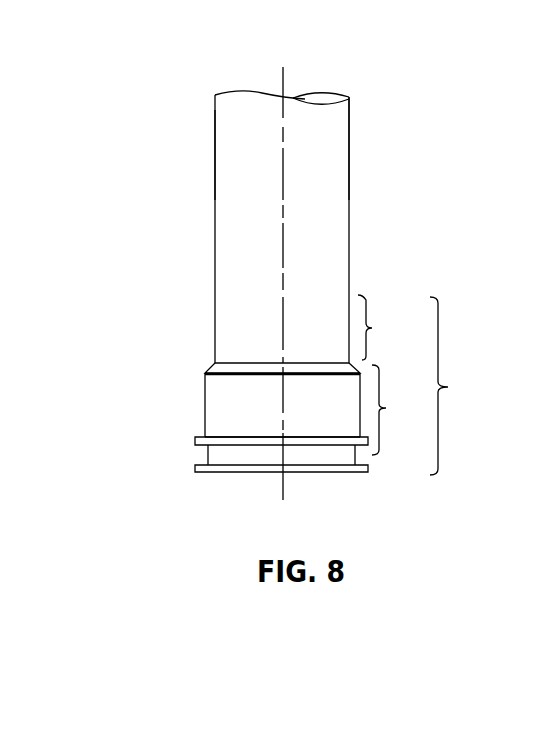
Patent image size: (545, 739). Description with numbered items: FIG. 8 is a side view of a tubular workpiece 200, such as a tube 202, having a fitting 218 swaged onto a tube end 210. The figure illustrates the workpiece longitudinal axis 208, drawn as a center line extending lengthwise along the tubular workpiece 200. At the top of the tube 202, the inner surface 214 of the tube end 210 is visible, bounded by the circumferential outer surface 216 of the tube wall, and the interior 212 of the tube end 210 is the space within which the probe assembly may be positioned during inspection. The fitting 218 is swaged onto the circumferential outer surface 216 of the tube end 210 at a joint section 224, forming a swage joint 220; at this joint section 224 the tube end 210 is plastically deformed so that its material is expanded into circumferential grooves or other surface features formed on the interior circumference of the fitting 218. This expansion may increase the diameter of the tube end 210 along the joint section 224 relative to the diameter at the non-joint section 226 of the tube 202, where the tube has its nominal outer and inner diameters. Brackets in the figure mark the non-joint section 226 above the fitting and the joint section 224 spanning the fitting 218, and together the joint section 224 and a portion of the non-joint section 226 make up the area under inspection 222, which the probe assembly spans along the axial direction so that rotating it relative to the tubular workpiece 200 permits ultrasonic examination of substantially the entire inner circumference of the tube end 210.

The tubular workpiece 200 is at (227, 95).
The tube 202 is at (215, 140).
The workpiece longitudinal axis 208 is at (284, 68).
The tube end 210 is at (215, 360).
The interior of the tube end 212 is at (306, 477).
The inner surface 214 is at (333, 98).
The circumferential outer surface 216 is at (352, 108).
The fitting 218 is at (205, 395).
The swage joint 220 is at (205, 407).
The area under inspection 222 is at (464, 386).
The joint section 224 is at (403, 410).
The non-joint section 226 is at (391, 327).